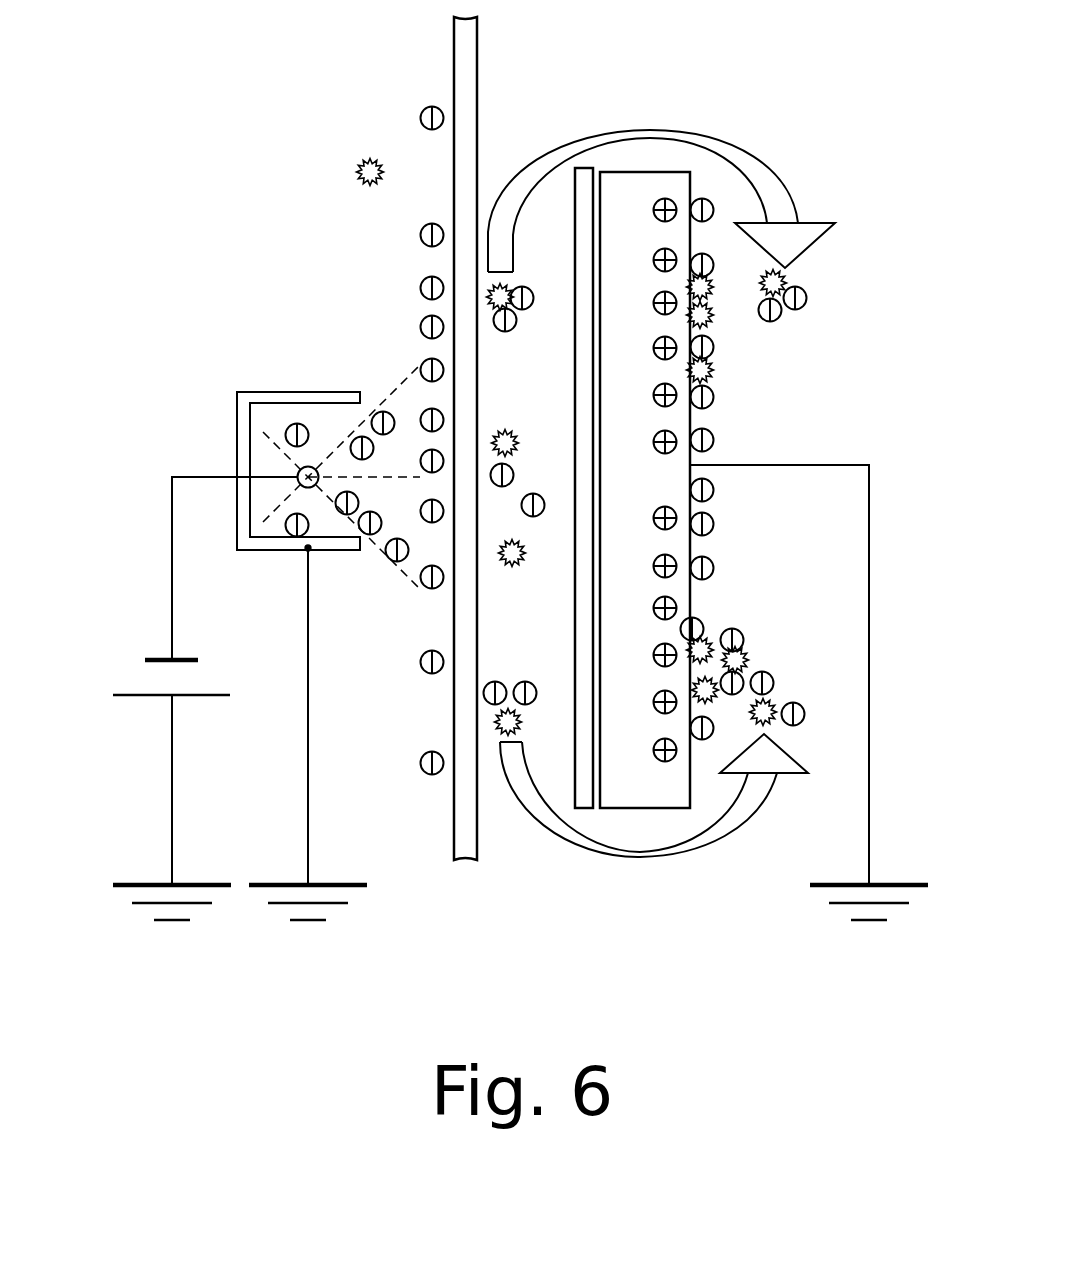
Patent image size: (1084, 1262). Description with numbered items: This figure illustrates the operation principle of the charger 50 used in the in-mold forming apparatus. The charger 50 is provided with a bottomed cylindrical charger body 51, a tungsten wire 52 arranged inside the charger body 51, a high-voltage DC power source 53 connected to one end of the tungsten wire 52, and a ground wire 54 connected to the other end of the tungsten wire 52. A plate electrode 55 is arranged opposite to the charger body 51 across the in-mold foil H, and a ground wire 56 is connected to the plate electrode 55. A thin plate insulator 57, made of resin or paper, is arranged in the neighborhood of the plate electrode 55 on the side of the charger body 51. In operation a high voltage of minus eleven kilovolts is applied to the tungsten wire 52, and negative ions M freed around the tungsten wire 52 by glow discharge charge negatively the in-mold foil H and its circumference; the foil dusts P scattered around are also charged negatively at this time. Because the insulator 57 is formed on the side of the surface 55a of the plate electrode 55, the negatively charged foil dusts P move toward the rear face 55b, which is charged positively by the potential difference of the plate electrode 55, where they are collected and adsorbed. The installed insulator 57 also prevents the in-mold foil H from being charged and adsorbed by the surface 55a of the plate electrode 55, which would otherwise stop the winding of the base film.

The in-mold foil H is at (478, 48).
The negative ions M is at (418, 240).
The foil dust P is at (356, 172).
The charger 50 is at (348, 553).
The charger body 51 is at (268, 392).
The tungsten wire 52 is at (300, 470).
The high-voltage DC power source 53 is at (135, 668).
The ground wire 54 is at (308, 735).
The plate electrode 55 is at (633, 425).
The surface of the plate electrode 55a is at (600, 763).
The rear face of the plate electrode 55b is at (690, 770).
The ground wire 56 is at (870, 760).
The insulator 57 is at (582, 168).